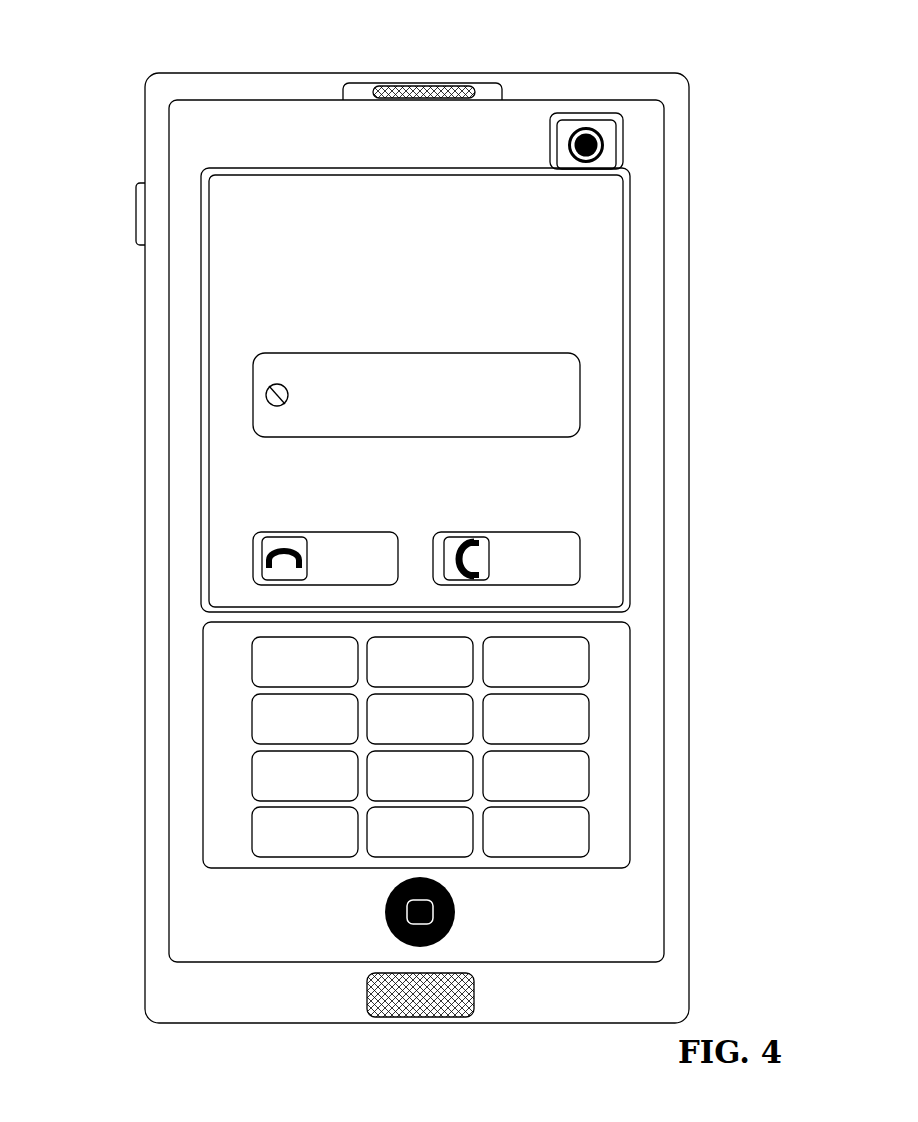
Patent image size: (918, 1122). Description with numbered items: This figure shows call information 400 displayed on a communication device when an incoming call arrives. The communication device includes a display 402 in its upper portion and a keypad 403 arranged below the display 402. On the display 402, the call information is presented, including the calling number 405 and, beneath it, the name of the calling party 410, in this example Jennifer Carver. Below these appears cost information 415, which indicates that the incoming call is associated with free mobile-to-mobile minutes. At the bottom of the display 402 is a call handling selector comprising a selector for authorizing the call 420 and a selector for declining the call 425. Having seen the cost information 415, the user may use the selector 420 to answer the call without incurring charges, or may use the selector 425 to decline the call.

The call information 400 is at (752, 71).
The display 402 is at (252, 309).
The keypad 403 is at (240, 673).
The calling number 405 is at (475, 222).
The name of the calling party 410 is at (485, 258).
The cost information 415 is at (580, 385).
The call handling selector for authorizing the call 420 is at (580, 548).
The call handling selector for declining the call 425 is at (253, 548).